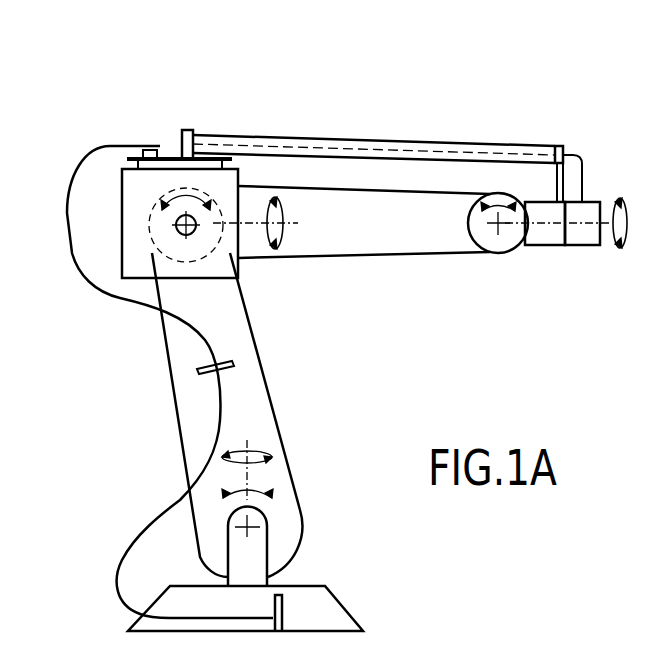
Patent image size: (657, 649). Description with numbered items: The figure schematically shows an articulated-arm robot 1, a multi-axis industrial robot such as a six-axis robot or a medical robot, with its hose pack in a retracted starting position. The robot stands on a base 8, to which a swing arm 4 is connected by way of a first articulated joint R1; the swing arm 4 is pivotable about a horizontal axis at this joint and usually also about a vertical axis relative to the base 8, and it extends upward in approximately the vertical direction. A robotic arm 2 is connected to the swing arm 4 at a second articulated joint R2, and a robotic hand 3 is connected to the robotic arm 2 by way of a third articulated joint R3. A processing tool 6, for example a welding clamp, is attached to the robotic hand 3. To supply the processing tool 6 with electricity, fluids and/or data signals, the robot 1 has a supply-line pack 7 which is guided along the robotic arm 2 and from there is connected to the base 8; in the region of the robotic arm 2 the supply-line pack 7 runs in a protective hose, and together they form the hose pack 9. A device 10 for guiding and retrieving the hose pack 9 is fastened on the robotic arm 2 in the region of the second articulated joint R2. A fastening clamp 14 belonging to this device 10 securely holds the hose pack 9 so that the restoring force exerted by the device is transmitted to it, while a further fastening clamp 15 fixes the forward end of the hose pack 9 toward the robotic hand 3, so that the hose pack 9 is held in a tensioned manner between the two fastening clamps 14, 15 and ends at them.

The articulated-arm robot 1 is at (437, 80).
The robotic arm 2 is at (361, 257).
The robotic hand 3 is at (545, 237).
The swing arm 4 is at (247, 397).
The processing tool 6 is at (590, 238).
The supply-line pack 7 is at (68, 195).
The base 8 is at (333, 605).
The hose pack 9 is at (369, 138).
The device for guiding and retrieving the hose pack 10 is at (161, 125).
The fastening clamp 14 is at (190, 130).
The further fastening clamp 15 is at (558, 145).
The first articulated joint R1 is at (258, 518).
The second articulated joint R2 is at (162, 241).
The third articulated joint R3 is at (502, 230).